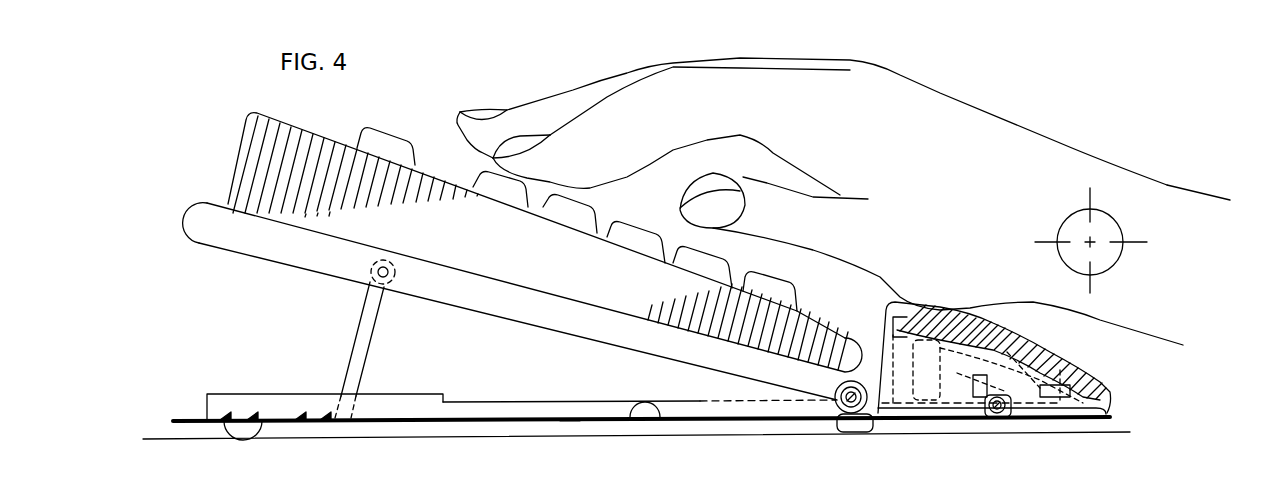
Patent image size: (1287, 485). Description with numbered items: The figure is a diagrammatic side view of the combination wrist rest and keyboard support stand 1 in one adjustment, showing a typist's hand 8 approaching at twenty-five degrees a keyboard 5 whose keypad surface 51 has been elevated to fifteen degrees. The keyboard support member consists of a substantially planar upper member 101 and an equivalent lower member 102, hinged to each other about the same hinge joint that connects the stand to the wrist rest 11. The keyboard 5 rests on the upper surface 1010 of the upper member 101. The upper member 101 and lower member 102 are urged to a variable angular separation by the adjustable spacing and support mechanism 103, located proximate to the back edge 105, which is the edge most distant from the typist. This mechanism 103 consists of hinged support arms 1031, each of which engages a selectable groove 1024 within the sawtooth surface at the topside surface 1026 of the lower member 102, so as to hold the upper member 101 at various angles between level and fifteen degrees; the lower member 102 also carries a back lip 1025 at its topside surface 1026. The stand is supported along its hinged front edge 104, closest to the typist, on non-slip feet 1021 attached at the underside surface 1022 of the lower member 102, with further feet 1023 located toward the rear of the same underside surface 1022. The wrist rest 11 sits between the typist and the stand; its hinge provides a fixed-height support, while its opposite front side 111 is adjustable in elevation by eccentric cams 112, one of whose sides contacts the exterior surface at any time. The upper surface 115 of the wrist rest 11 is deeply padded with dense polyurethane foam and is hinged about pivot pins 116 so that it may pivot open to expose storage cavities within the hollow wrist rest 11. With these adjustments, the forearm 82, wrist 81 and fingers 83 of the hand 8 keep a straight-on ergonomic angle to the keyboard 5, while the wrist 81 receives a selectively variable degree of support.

The combination wrist rest and keyboard support stand 1 is at (168, 424).
The keyboard 5 is at (238, 146).
The keypad surface 51 is at (442, 178).
The back edge 105 is at (183, 222).
The upper surface 1010 is at (456, 263).
The upper member 101 is at (563, 331).
The lower member 102 is at (446, 420).
The underside surface 1022 is at (563, 422).
The back lip 1025 is at (207, 394).
The grooves 1024 is at (273, 413).
The feet 1023 is at (245, 441).
The topside surface 1026 is at (659, 414).
The adjustable spacing and support mechanism 103 is at (318, 414).
The hinged support arm 1031 is at (376, 328).
The feet 1021 is at (855, 426).
The hinged front edge 104 is at (907, 426).
The wrist rest 11 is at (1108, 389).
The front side 111 is at (1108, 413).
The eccentric cams 112 is at (1002, 418).
The upper surface 115 is at (1078, 360).
The pivot pins 116 is at (1035, 331).
The hand 8 is at (997, 113).
The wrist 81 is at (1103, 208).
The forearm 82 is at (1200, 218).
The fingers 83 is at (707, 100).